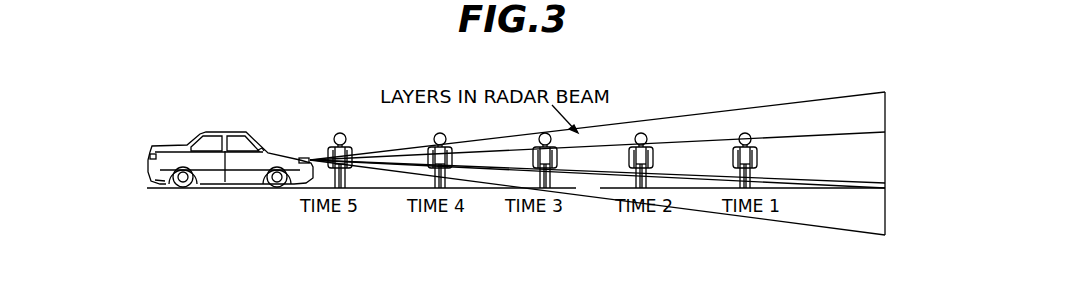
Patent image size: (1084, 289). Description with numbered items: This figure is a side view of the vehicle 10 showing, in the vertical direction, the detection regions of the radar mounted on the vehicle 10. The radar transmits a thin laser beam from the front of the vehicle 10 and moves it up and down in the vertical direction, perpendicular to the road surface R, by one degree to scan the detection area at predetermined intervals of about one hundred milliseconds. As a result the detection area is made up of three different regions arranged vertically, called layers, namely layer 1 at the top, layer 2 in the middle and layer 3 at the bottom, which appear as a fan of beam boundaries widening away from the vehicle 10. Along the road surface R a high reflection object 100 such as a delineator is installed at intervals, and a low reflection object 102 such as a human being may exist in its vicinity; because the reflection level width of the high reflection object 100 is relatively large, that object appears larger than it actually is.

The vehicle 10 is at (208, 132).
The road surface R is at (208, 190).
The high reflection object 100 is at (437, 176).
The low reflection object 102 is at (743, 133).
The layer 1 is at (597, 126).
The layer 2 is at (597, 168).
The layer 3 is at (597, 163).